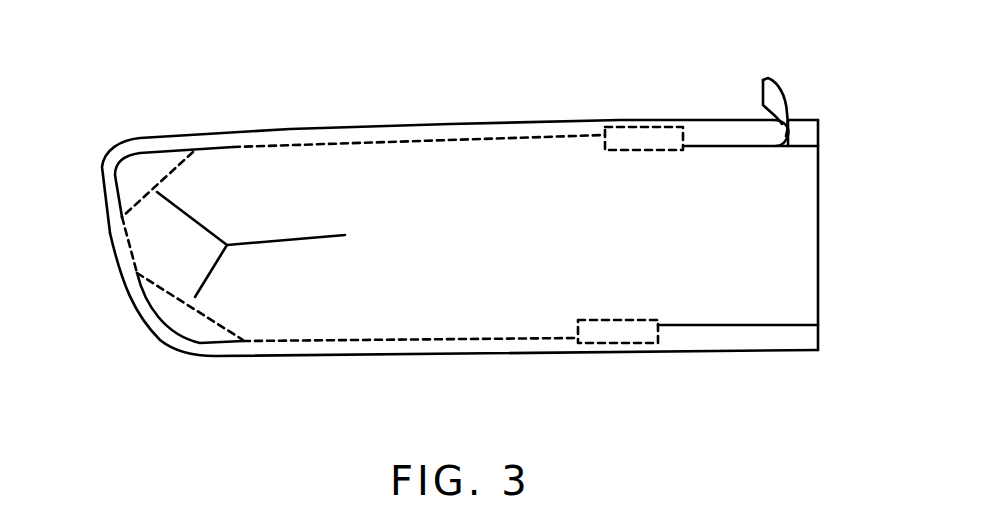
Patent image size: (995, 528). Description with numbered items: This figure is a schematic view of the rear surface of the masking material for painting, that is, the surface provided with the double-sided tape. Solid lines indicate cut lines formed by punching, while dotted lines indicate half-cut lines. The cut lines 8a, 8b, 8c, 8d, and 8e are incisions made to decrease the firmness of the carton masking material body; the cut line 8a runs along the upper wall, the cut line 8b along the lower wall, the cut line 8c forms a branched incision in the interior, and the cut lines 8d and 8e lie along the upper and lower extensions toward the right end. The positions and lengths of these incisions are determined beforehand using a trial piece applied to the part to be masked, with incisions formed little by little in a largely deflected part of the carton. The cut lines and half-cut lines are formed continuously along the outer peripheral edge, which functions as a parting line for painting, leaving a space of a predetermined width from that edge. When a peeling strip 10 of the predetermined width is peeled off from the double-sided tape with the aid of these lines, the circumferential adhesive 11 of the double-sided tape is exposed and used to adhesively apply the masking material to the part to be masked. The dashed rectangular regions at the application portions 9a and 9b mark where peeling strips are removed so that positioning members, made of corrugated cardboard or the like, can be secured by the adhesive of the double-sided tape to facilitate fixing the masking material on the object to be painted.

The cut line 8a is at (170, 150).
The cut line 8b is at (213, 343).
The cut line 8c is at (288, 238).
The cut line 8d is at (717, 143).
The cut line 8e is at (735, 327).
The application portion 9a is at (125, 175).
The application portion 9b is at (618, 345).
The peeling strip 10 is at (773, 82).
The circumferential adhesive 11 is at (803, 125).